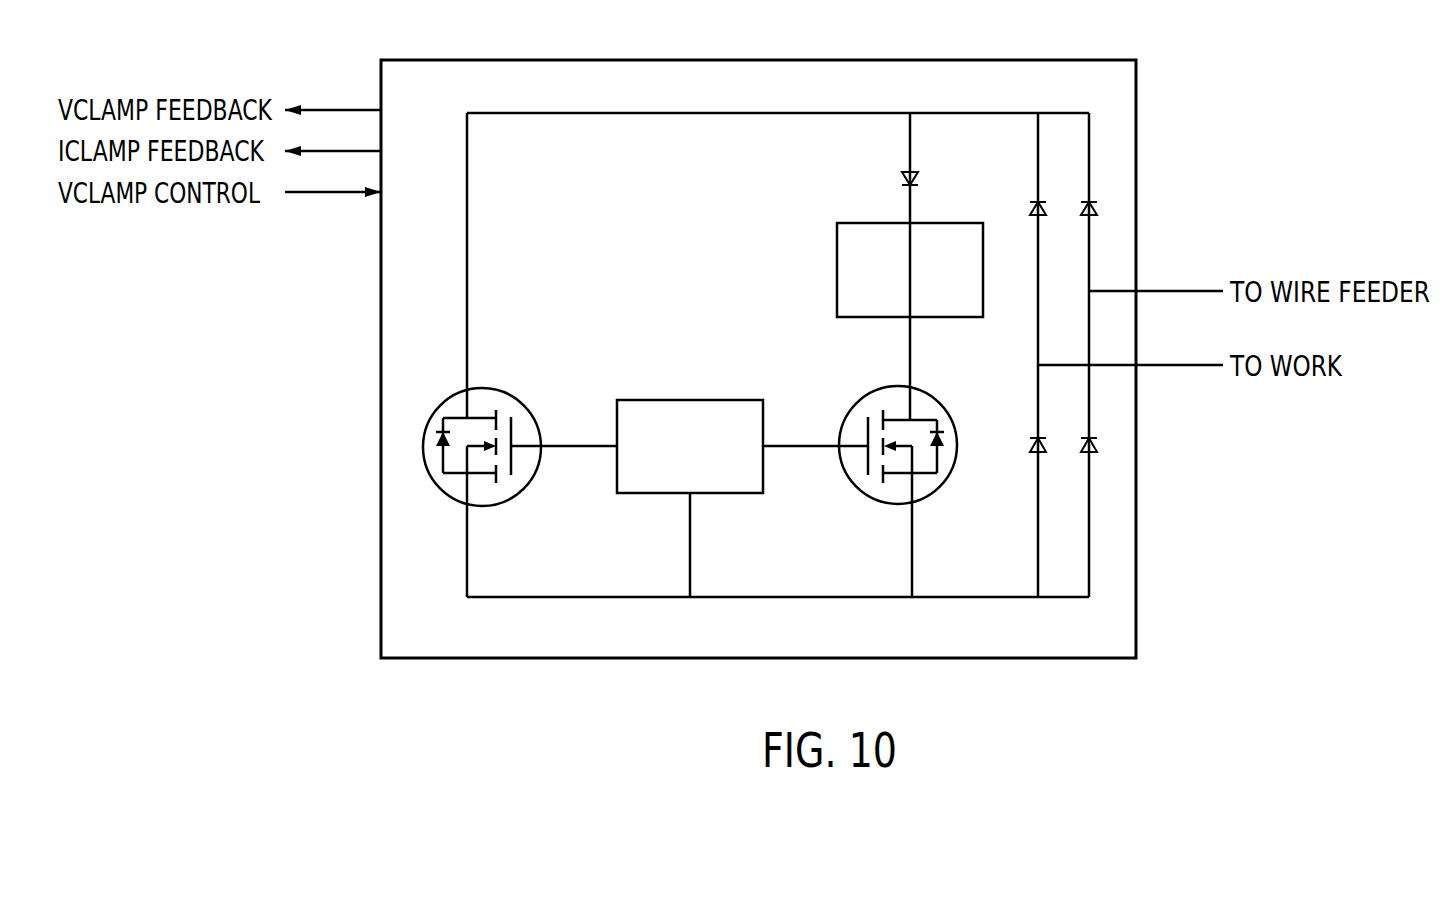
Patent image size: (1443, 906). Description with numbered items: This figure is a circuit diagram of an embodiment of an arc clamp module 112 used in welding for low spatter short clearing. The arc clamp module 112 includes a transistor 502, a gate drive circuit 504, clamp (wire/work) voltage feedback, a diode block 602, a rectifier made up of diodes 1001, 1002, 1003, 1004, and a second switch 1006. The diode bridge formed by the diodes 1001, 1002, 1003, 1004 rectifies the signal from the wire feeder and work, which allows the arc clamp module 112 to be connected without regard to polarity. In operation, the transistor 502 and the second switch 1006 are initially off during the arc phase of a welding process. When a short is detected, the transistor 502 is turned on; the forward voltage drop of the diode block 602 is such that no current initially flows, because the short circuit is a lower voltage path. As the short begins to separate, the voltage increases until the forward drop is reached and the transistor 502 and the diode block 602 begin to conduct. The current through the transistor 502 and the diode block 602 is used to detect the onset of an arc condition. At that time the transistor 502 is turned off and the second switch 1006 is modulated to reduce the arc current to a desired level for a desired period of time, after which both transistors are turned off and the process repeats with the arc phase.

The arc clamp module 112 is at (1137, 97).
The transistor 502 is at (948, 477).
The gate drive circuit 504 is at (688, 400).
The diode block 602 is at (837, 270).
The diode 1001 is at (1096, 210).
The diode 1002 is at (1030, 208).
The diode 1003 is at (1096, 447).
The diode 1004 is at (1028, 445).
The second switch 1006 is at (510, 392).